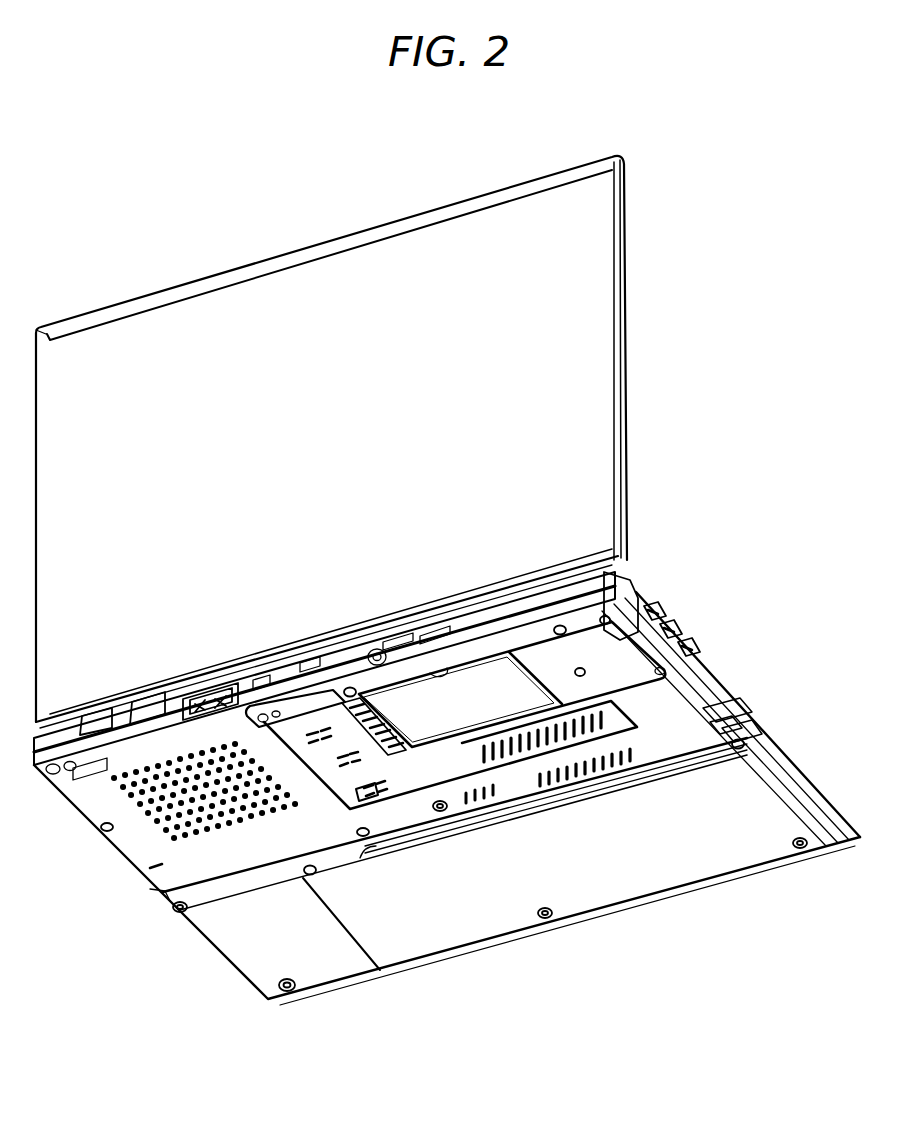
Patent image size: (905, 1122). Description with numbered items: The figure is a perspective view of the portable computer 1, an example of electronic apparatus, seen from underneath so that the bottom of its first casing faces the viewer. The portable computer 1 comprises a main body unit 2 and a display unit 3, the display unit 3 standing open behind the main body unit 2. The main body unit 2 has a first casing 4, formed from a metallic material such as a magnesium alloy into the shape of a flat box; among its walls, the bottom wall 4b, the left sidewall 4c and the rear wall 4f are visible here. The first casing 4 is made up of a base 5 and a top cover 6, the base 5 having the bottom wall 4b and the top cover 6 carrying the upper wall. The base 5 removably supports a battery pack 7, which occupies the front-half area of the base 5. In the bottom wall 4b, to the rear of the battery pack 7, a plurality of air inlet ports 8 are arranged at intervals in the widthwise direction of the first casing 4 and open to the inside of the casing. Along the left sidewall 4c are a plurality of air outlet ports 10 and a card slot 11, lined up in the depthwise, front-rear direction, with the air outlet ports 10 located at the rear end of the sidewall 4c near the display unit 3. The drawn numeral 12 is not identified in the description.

The portable computer 1 is at (302, 232).
The main body unit 2 is at (267, 1003).
The display unit 3 is at (627, 346).
The first casing 4 is at (797, 673).
The bottom wall 4b is at (170, 873).
The left sidewall 4c is at (722, 708).
The rear wall 4f is at (497, 610).
The base 5 is at (760, 753).
The top cover 6 is at (744, 710).
The battery pack 7 is at (612, 888).
The air inlet ports 8 is at (552, 750).
The air outlet ports 10 is at (684, 641).
The card slot 11 is at (730, 738).
The display housing 12 is at (584, 274).